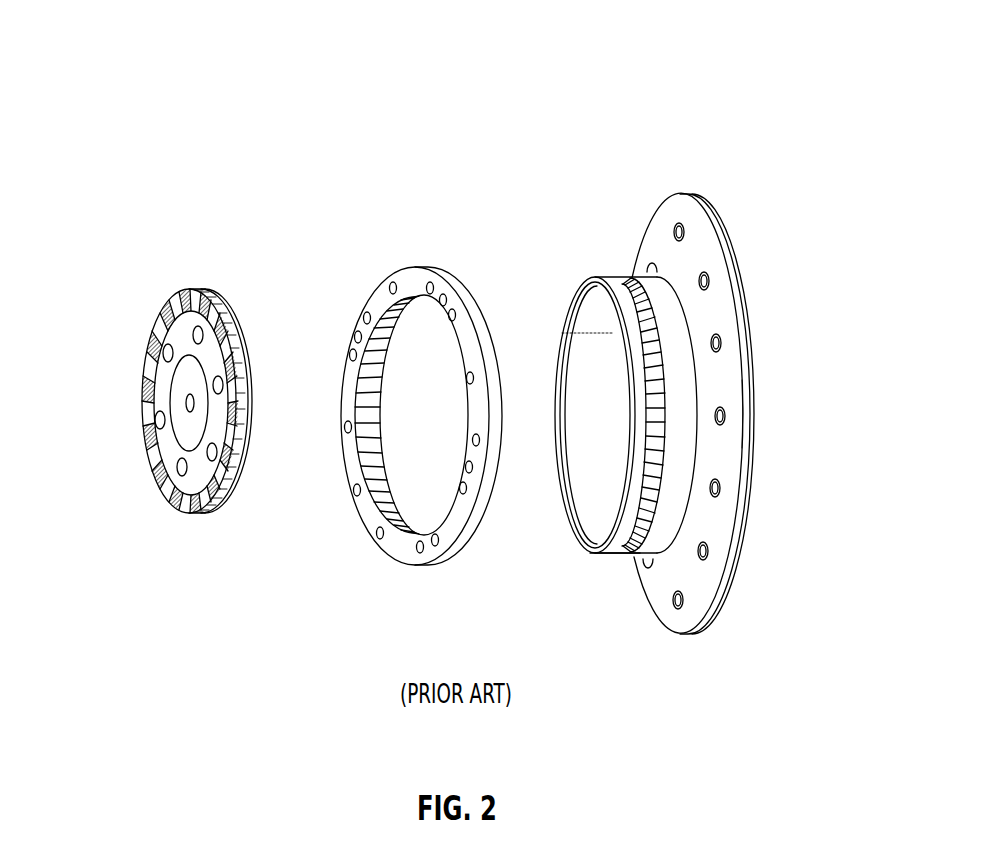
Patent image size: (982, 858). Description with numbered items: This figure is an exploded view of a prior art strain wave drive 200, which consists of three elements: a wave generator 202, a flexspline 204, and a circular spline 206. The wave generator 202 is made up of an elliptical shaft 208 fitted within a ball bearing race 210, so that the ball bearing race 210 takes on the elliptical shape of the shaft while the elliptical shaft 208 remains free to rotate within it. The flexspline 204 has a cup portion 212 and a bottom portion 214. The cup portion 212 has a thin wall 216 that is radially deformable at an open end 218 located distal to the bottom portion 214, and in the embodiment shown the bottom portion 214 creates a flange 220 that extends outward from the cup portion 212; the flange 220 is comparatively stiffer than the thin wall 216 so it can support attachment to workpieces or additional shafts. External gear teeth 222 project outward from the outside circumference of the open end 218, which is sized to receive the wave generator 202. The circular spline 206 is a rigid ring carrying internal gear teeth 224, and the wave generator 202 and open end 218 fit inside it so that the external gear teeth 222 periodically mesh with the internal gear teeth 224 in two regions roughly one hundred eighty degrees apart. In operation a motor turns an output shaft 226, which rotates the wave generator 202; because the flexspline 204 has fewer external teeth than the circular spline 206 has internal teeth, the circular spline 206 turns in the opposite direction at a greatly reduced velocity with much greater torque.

The strain wave drive 200 is at (472, 88).
The wave generator 202 is at (155, 397).
The flexspline 204 is at (683, 413).
The circular spline 206 is at (386, 417).
The elliptical shaft 208 is at (180, 392).
The ball bearing race 210 is at (192, 493).
The cup portion 212 is at (618, 552).
The bottom portion 214 is at (727, 310).
The thin wall 216 is at (634, 418).
The open end 218 is at (534, 511).
The flange 220 is at (753, 423).
The external gear teeth 222 is at (647, 523).
The internal gear teeth 224 is at (362, 470).
The output shaft 226 is at (188, 405).